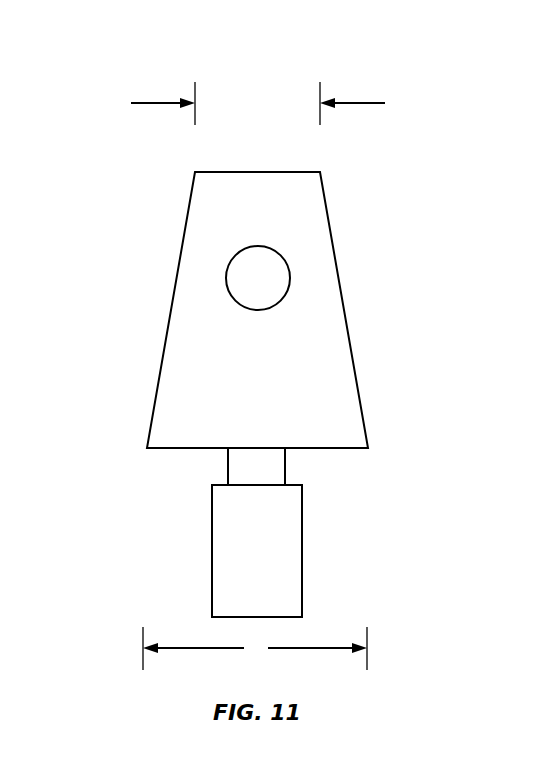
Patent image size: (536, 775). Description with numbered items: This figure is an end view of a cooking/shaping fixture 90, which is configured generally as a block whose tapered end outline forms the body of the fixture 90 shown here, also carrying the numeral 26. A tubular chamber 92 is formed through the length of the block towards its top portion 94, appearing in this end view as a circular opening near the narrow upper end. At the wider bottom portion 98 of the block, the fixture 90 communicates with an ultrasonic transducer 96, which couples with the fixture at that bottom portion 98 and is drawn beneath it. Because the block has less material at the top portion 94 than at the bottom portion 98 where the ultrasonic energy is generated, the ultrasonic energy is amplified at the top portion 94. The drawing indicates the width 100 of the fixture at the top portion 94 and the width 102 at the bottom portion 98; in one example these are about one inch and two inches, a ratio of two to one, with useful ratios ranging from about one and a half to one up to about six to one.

The fixture 90 is at (80, 204).
The trapezoidal plate 26 is at (241, 310).
The top portion 94 is at (262, 157).
The bottom portion 98 is at (246, 465).
The tubular chamber 92 is at (306, 257).
The ultrasonic transducer 96 is at (283, 532).
The width 100 is at (258, 82).
The width 102 is at (264, 634).